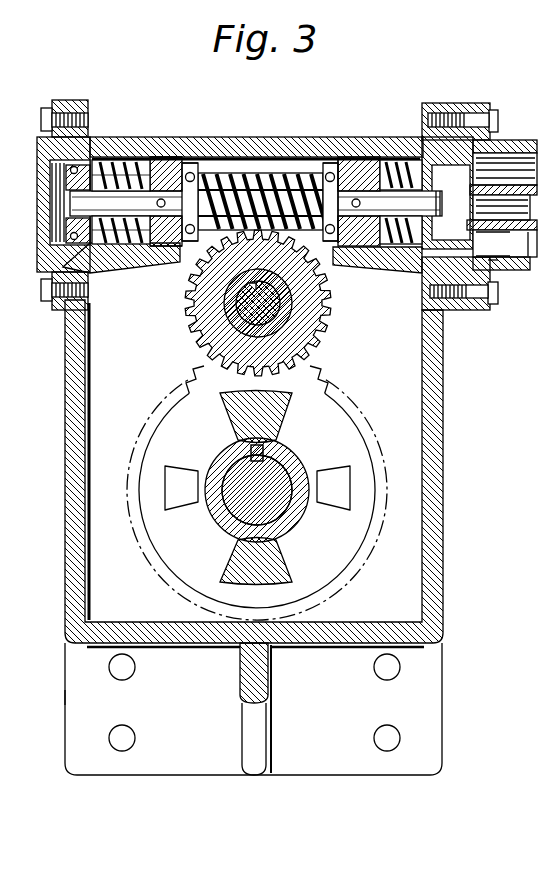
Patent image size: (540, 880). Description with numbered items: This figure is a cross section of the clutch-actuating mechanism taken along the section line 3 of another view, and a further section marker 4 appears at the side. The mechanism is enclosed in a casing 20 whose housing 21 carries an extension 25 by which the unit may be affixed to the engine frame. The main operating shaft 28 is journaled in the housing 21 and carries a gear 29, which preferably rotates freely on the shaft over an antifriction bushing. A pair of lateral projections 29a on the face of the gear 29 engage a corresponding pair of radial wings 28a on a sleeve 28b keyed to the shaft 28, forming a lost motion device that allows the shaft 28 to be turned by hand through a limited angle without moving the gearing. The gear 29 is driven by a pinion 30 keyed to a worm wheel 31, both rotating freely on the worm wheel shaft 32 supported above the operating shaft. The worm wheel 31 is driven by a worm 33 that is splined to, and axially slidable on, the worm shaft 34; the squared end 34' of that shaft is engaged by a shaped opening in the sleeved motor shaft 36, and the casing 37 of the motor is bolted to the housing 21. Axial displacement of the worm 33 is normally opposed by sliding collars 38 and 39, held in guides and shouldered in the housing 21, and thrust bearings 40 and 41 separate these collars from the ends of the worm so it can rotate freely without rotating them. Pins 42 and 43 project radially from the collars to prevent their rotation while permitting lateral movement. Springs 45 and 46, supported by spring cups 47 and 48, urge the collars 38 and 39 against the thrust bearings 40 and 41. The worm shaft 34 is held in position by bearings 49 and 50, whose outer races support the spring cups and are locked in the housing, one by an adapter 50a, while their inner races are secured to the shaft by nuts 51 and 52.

The section line 3 is at (90, 259).
The section line 4 is at (0, 697).
The casing 20 is at (458, 456).
The housing 21 is at (246, 142).
The extension 25 is at (432, 704).
The main operating shaft 28 is at (275, 470).
The radial wings 28a is at (282, 425).
The sleeve 28b is at (222, 456).
The gear 29 is at (352, 580).
The lateral projections 29a is at (178, 503).
The pinion 30 is at (312, 336).
The worm wheel 31 is at (326, 318).
The worm wheel shaft 32 is at (246, 302).
The worm 33 is at (300, 168).
The worm shaft 34 is at (347, 178).
The squared end of worm shaft 34' is at (510, 282).
The sleeved motor shaft 36 is at (523, 244).
The casing of the motor 37 is at (534, 142).
The sliding collar 38 is at (356, 172).
The sliding collar 39 is at (163, 157).
The thrust bearing 40 is at (338, 195).
The thrust bearing 41 is at (198, 170).
The pin 42 is at (359, 150).
The pin 43 is at (185, 137).
The spring 45 is at (398, 155).
The spring 46 is at (105, 160).
The spring cup 47 is at (415, 138).
The spring cup 48 is at (118, 162).
The worm shaft bearing 49 is at (422, 280).
The worm shaft bearing 50 is at (70, 160).
The adapter 50a is at (458, 110).
The nut 51 is at (493, 244).
The nut 52 is at (66, 230).